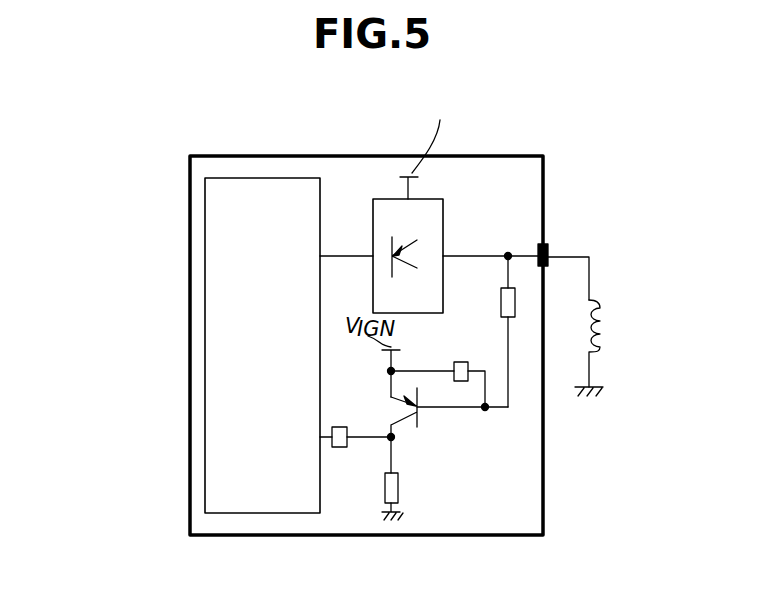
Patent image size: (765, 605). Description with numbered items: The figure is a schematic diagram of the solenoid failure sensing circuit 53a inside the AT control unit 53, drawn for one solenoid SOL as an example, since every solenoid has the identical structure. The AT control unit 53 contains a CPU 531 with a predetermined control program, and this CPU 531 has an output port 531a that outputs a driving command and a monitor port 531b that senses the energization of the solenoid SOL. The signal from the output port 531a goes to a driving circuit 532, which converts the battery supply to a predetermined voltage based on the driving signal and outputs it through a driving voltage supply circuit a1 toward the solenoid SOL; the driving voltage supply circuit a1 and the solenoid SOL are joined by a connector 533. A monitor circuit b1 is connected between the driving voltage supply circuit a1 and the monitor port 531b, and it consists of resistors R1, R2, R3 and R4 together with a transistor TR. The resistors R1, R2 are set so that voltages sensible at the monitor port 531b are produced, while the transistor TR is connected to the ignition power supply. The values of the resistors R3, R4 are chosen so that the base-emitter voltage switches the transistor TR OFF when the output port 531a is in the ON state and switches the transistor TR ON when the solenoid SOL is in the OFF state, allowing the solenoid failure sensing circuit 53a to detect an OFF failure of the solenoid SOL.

The AT control unit 53 is at (546, 190).
The CPU 531 is at (205, 212).
The output port 531a is at (318, 256).
The monitor port 531b is at (318, 437).
The driving circuit 532 is at (385, 199).
The connector 533 is at (551, 250).
The solenoid failure sensing circuit 53a is at (496, 456).
The driving voltage supply circuit a1 is at (471, 256).
The monitor circuit b1 is at (509, 393).
The transistor TR is at (426, 424).
The resistor R1 is at (361, 427).
The resistor R2 is at (378, 496).
The resistor R3 is at (438, 373).
The resistor R4 is at (492, 331).
The solenoid SOL is at (611, 348).